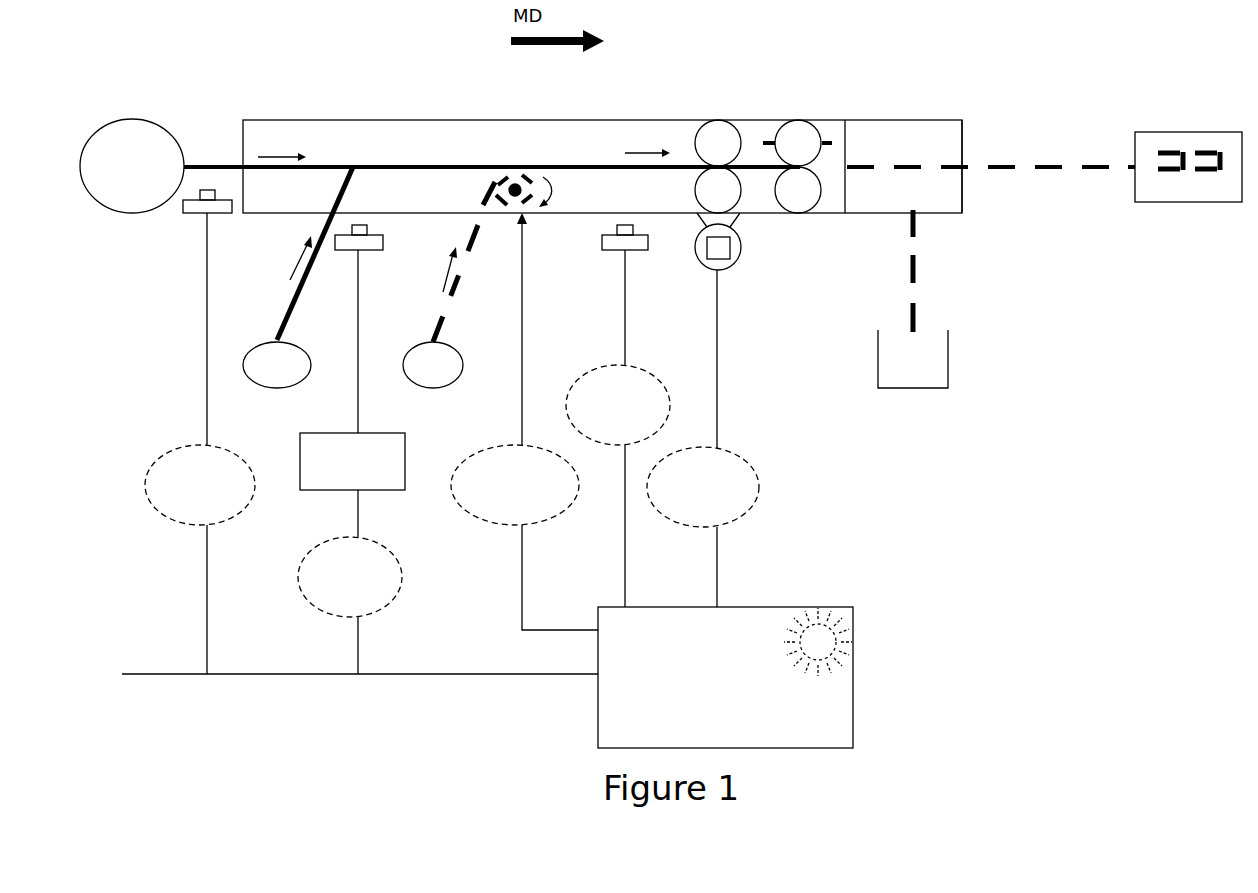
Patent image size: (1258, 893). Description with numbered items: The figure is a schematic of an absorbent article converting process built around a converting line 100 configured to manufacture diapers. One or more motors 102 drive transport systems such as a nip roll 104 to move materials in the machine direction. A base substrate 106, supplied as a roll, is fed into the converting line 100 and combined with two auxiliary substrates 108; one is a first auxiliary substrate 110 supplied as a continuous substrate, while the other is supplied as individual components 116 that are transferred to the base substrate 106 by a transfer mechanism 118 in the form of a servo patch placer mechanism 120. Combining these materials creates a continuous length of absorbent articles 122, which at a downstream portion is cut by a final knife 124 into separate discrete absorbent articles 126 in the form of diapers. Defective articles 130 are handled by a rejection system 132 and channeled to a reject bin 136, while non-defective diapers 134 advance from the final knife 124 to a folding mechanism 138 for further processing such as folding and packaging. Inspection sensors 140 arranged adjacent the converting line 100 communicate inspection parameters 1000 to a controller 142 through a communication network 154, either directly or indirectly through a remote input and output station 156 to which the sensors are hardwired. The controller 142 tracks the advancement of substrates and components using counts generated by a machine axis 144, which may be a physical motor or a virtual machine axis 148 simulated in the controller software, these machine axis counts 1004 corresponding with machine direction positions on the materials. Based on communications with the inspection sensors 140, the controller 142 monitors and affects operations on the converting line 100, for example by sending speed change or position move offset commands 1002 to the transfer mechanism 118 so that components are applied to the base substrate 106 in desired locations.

The converting line 100 is at (402, 130).
The motor 102 is at (728, 266).
The nip roll 104 is at (716, 136).
The base substrate 106 is at (212, 165).
The auxiliary substrates 108 is at (268, 374).
The first auxiliary substrate 110 is at (425, 380).
The individual components 116 is at (455, 292).
The transfer mechanism 118 is at (512, 310).
The servo patch placer mechanism 120 is at (500, 213).
The continuous length of absorbent articles 122 is at (750, 160).
The final knife 124 is at (800, 136).
The discrete absorbent articles 126 is at (991, 122).
The defective articles 130 is at (918, 268).
The rejection system 132 is at (956, 201).
The non-defective diapers 134 is at (1045, 165).
The reject bin 136 is at (948, 368).
The folding mechanism 138 is at (1176, 190).
The inspection sensors 140 is at (198, 207).
The controller 142 is at (833, 708).
The machine axis 144 is at (878, 642).
The virtual machine axis 148 is at (830, 642).
The communication network 154 is at (207, 323).
The remote input and output station 156 is at (393, 459).
The inspection parameters 1000 is at (172, 518).
The speed change or position move offset commands 1002 is at (522, 543).
The machine axis counts 1004 is at (762, 477).